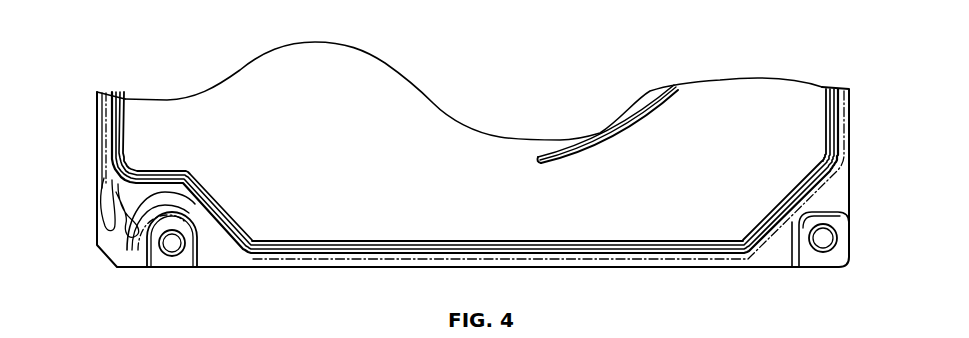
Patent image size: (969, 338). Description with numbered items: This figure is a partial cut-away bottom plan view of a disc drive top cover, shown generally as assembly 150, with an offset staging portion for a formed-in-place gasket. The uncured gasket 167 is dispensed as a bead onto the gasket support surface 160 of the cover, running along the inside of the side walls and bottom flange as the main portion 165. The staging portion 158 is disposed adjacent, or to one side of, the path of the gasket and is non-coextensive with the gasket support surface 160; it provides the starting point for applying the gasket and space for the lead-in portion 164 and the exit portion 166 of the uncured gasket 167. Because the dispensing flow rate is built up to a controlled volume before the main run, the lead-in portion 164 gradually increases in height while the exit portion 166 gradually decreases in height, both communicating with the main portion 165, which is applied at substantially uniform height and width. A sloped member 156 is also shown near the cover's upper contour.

The gasket assembly 150 is at (528, 53).
The sloped support member 156 is at (637, 120).
The staging portion 158 is at (97, 209).
The gasket support surface 160 is at (780, 255).
The lead-in portion 164 is at (127, 242).
The main portion 165 is at (185, 180).
The exit portion 166 is at (103, 240).
The uncured gasket 167 is at (344, 270).